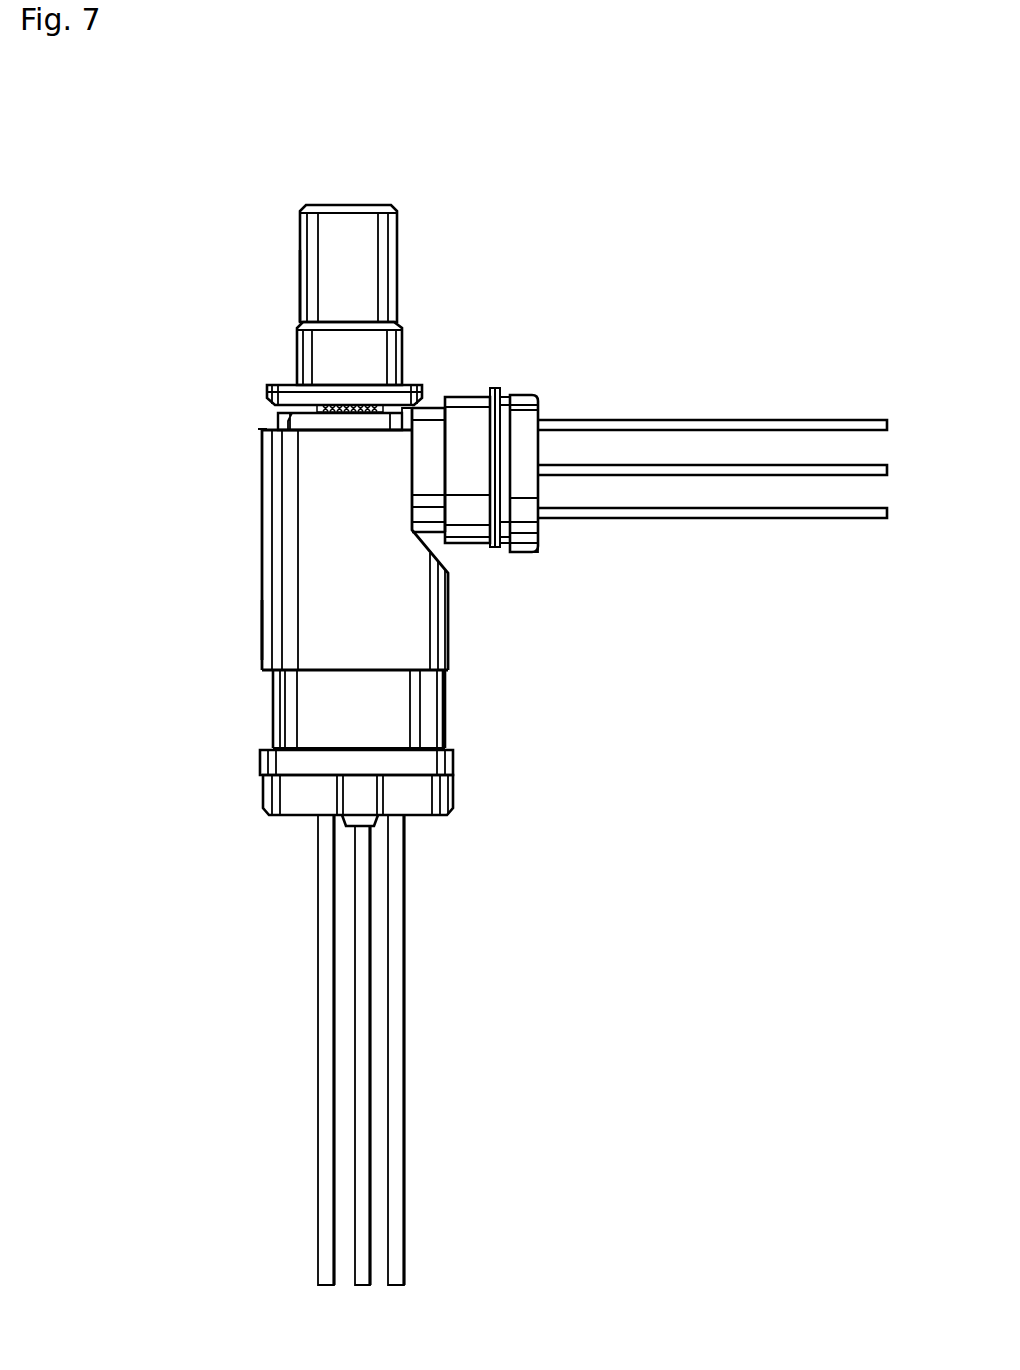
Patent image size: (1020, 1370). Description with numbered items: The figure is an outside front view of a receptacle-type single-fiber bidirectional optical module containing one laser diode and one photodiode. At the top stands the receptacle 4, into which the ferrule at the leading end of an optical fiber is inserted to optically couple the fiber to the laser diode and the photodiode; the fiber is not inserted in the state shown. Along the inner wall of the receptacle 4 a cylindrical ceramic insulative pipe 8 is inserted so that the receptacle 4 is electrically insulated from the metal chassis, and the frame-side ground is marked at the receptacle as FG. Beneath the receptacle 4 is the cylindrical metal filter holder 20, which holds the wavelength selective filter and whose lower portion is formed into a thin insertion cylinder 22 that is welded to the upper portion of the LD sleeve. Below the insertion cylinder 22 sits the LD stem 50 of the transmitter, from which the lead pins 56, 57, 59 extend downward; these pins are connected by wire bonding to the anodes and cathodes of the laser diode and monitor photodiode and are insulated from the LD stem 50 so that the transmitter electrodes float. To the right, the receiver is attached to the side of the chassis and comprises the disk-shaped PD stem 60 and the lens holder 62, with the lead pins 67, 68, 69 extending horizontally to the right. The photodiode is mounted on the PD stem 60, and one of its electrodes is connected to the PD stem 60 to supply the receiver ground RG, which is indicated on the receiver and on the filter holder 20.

The receptacle 4 is at (392, 288).
The frame ground FG is at (293, 304).
The insulative pipe 8 is at (318, 409).
The filter holder 20 is at (298, 583).
The insertion cylinder 22 is at (448, 650).
The receiver ground RG is at (255, 635).
The LD stem 50 is at (420, 800).
The lead pin 56 is at (327, 1065).
The lead pin 57 is at (283, 703).
The lead pin 59 is at (364, 1070).
The PD stem 60 is at (538, 410).
The lens holder 62 is at (470, 398).
The lead pin 67 is at (698, 516).
The lead pin 68 is at (706, 458).
The lead pin 69 is at (706, 412).